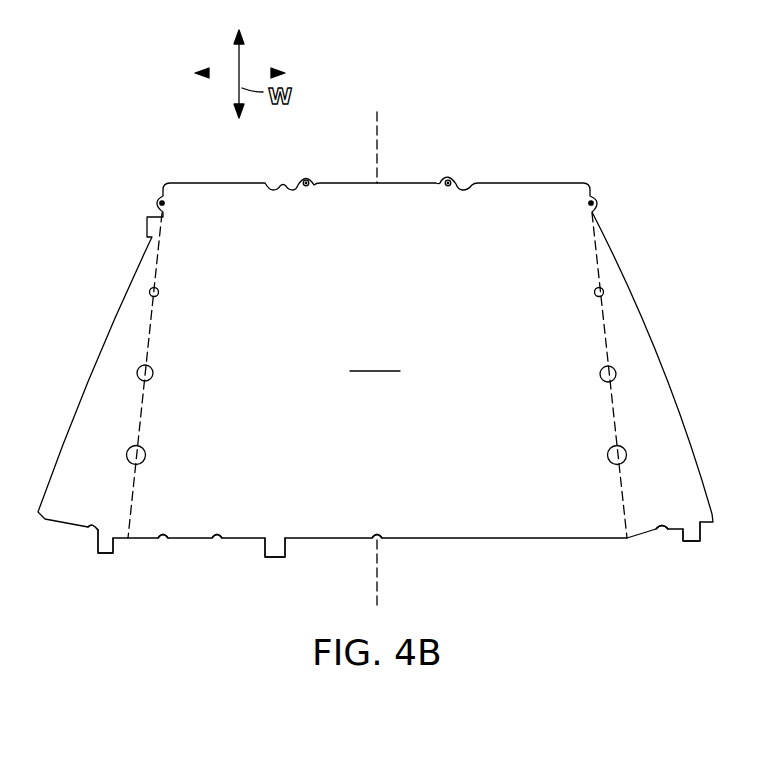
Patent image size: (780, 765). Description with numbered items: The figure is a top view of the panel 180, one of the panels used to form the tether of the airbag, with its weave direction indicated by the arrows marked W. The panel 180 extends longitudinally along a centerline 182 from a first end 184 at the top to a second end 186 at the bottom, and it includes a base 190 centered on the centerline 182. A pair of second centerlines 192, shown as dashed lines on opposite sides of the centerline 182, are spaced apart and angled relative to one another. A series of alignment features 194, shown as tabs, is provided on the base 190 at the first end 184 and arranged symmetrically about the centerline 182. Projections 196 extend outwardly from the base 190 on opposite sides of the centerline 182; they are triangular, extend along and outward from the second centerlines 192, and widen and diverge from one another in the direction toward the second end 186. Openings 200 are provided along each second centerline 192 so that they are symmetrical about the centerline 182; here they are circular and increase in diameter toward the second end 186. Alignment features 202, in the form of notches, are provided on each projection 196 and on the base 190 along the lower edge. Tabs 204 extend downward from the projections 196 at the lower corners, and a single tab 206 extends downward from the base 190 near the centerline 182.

The panel 180 is at (147, 167).
The centerline 182 is at (379, 149).
The first end 184 is at (618, 173).
The second end 186 is at (633, 550).
The base 190 is at (375, 367).
The second centerlines 192 is at (148, 343).
The alignment features 194 is at (157, 204).
The projections 196 is at (113, 377).
The openings 200 is at (122, 452).
The alignment features 202 is at (90, 532).
The tabs 204 is at (105, 556).
The tab 206 is at (273, 558).